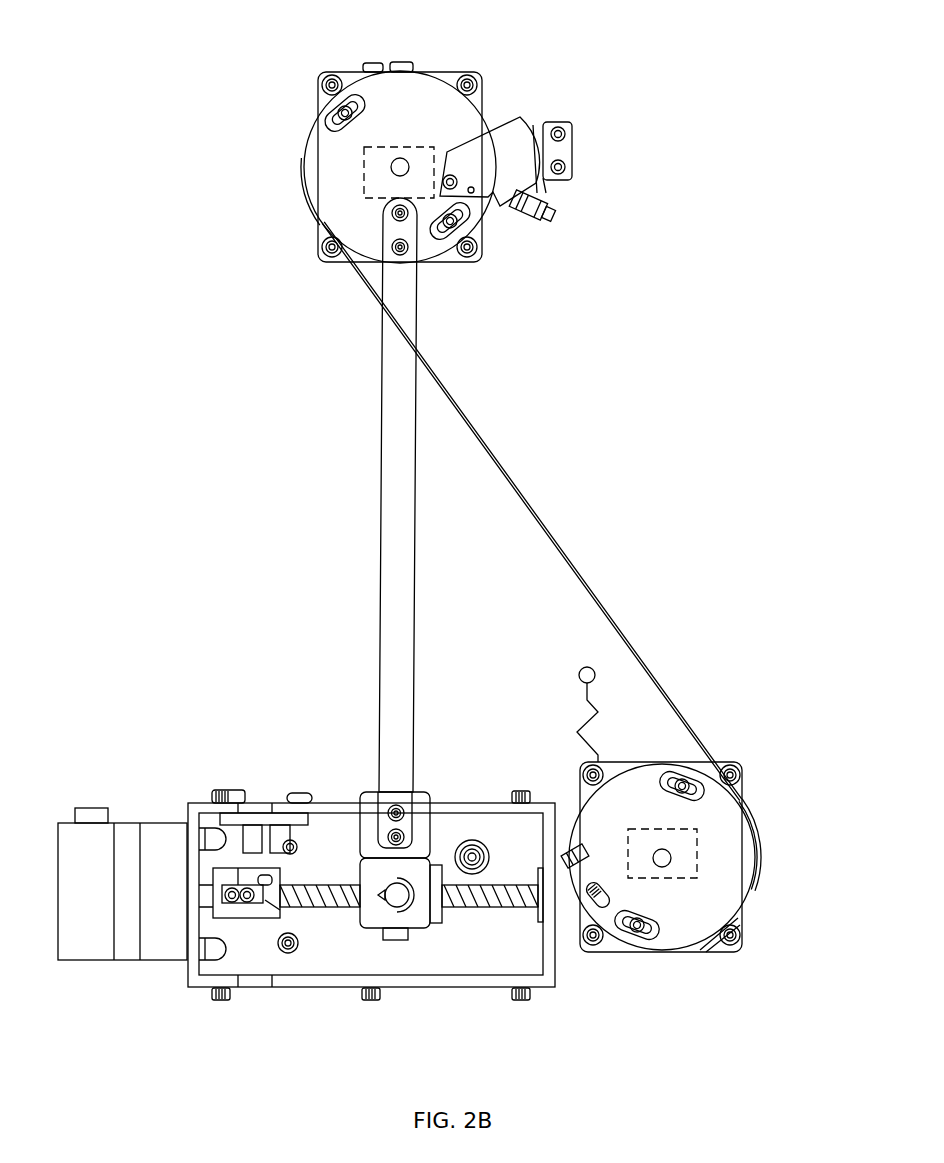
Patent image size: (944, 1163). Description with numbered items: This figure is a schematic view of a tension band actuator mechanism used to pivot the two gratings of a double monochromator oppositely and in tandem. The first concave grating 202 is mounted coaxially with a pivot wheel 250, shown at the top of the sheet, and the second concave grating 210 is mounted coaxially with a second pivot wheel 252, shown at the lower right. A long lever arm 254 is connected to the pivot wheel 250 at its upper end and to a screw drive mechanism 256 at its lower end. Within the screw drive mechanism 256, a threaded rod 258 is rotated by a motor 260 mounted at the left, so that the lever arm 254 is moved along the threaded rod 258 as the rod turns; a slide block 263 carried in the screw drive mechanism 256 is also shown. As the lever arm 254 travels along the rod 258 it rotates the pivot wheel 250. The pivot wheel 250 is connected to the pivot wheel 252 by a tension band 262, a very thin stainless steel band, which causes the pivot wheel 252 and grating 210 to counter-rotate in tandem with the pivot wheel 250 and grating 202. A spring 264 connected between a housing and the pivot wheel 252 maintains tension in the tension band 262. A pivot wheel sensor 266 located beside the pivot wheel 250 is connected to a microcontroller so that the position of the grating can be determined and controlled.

The pivot wheel 250 is at (427, 80).
The first concave grating 202 is at (431, 147).
The pivot wheel sensor 266 is at (546, 224).
The lever arm 254 is at (383, 545).
The tension band 262 is at (562, 543).
The spring 264 is at (577, 732).
The pivot wheel 252 is at (727, 812).
The second concave grating 210 is at (700, 853).
The screw drive mechanism 256 is at (262, 803).
The slide block 263 is at (272, 857).
The threaded rod 258 is at (473, 912).
The motor 260 is at (108, 960).